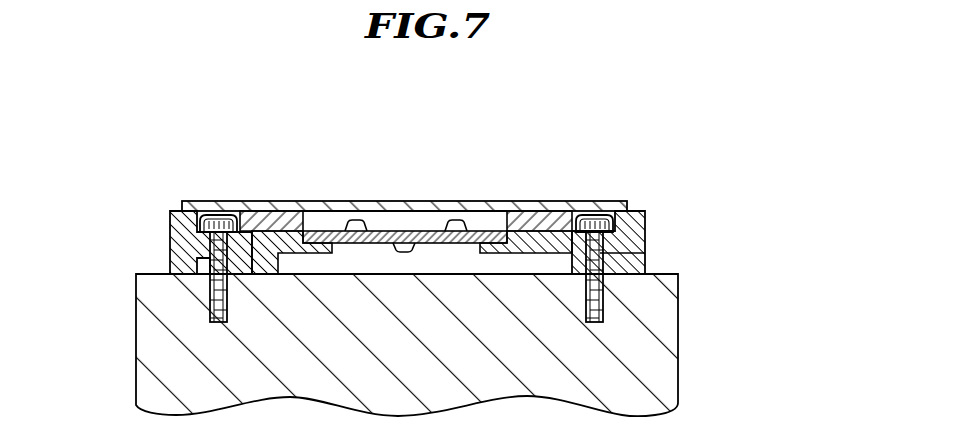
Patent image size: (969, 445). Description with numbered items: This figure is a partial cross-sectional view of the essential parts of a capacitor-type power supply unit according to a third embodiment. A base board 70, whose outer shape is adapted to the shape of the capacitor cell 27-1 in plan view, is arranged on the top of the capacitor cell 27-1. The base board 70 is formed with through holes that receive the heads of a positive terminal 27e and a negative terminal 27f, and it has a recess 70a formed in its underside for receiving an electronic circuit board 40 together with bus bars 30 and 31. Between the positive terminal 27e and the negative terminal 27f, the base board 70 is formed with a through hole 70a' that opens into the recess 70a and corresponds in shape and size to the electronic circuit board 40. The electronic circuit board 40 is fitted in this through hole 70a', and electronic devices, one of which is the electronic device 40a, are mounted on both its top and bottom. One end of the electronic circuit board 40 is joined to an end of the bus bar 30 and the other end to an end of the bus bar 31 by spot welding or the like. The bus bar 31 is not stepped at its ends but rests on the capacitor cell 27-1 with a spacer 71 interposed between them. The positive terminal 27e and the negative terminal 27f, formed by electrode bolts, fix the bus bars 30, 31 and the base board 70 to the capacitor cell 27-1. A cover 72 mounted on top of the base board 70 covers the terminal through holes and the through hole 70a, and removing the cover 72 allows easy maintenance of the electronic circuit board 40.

The capacitor cell 27-1 is at (667, 337).
The positive terminal 27e is at (198, 257).
The negative terminal 27f is at (640, 232).
The bus bar 30 is at (263, 220).
The bus bar 31 is at (547, 217).
The electronic circuit board 40 is at (502, 227).
The electronic device 40a is at (355, 219).
The base board 70 is at (640, 213).
The recess 70a is at (425, 182).
The through hole 70a' is at (405, 173).
The spacer 71 is at (627, 258).
The cover 72 is at (304, 209).